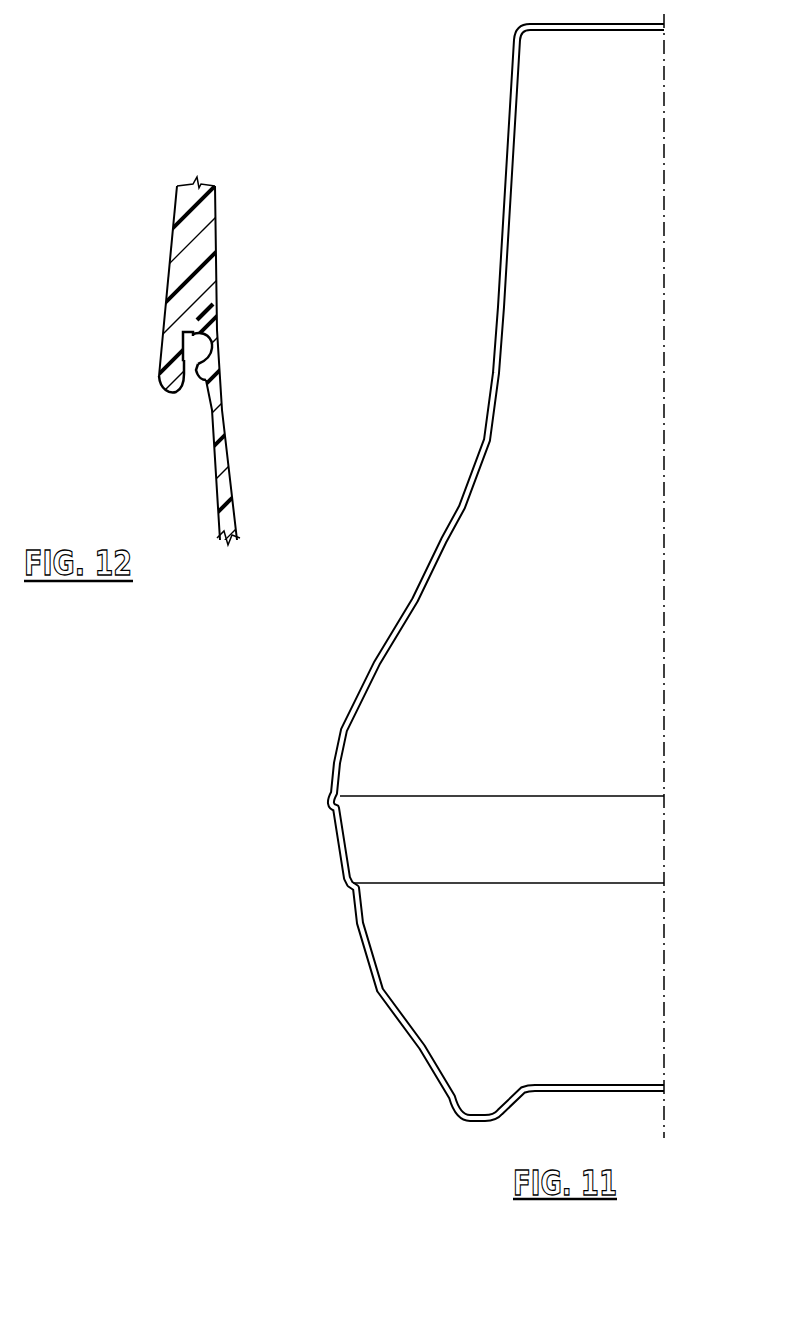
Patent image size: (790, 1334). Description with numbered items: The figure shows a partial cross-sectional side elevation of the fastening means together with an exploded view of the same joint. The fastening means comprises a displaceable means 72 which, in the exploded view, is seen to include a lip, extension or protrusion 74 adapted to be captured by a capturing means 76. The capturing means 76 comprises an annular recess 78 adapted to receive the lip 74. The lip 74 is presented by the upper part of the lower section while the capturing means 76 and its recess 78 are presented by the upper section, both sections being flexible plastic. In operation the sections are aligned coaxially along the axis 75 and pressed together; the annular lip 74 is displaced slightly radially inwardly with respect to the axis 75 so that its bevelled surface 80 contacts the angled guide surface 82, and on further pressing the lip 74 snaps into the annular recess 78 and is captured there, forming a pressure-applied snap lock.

In FIG. 12, the displaceable means 72 is at (242, 352).
In FIG. 11, the displaceable means 72 is at (309, 837).
In FIG. 12, the lip 74 is at (216, 338).
In FIG. 11, the axis 75 is at (664, 699).
In FIG. 12, the capturing means 76 is at (162, 378).
In FIG. 12, the recess 78 is at (180, 337).
In FIG. 12, the bevelled surface 80 is at (196, 318).
In FIG. 12, the angled guide surface 82 is at (202, 377).